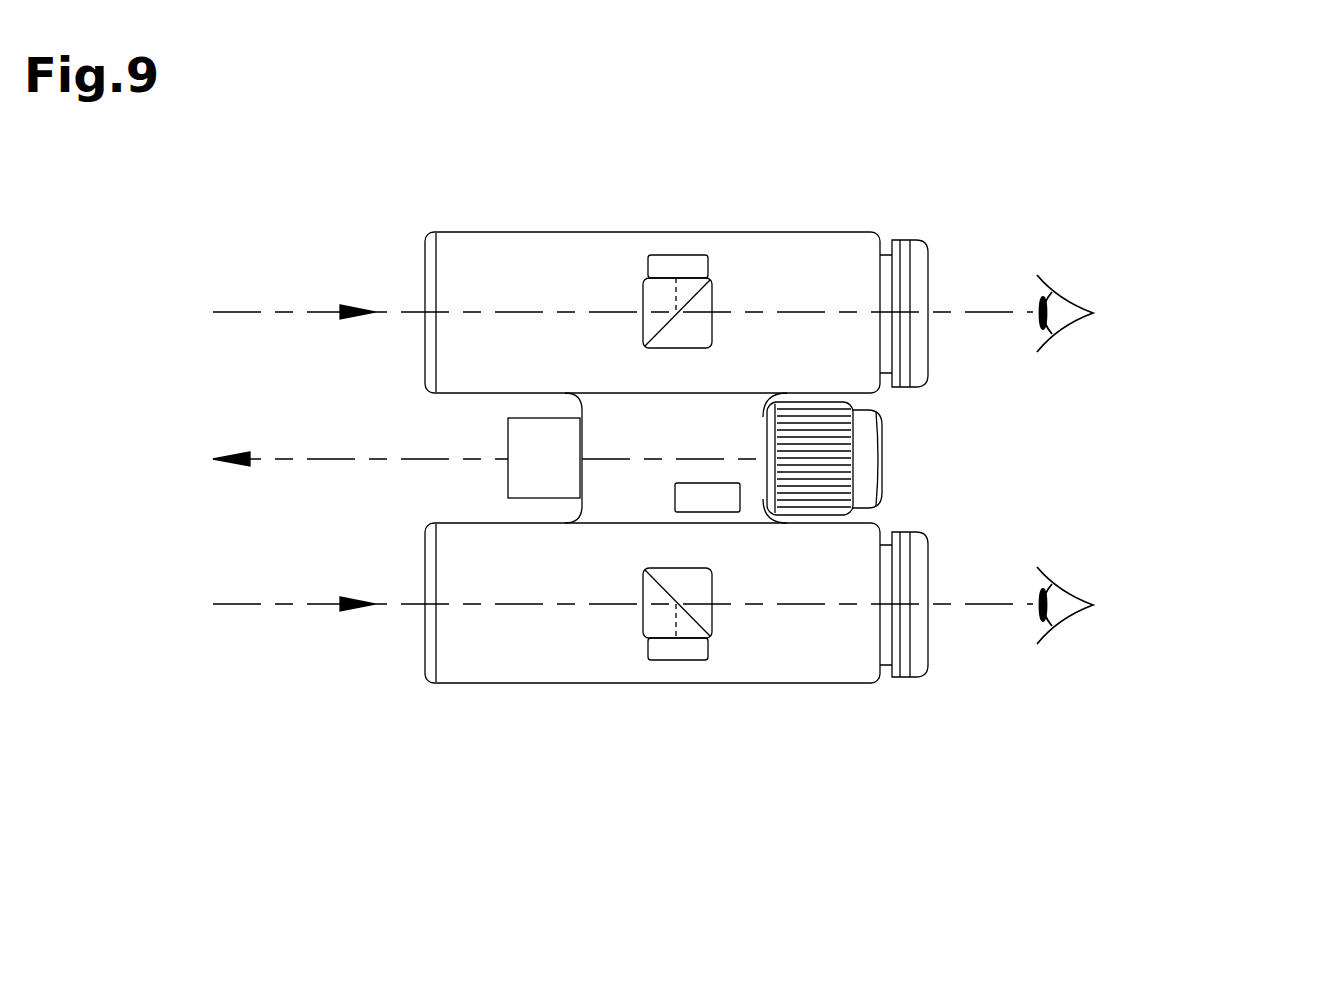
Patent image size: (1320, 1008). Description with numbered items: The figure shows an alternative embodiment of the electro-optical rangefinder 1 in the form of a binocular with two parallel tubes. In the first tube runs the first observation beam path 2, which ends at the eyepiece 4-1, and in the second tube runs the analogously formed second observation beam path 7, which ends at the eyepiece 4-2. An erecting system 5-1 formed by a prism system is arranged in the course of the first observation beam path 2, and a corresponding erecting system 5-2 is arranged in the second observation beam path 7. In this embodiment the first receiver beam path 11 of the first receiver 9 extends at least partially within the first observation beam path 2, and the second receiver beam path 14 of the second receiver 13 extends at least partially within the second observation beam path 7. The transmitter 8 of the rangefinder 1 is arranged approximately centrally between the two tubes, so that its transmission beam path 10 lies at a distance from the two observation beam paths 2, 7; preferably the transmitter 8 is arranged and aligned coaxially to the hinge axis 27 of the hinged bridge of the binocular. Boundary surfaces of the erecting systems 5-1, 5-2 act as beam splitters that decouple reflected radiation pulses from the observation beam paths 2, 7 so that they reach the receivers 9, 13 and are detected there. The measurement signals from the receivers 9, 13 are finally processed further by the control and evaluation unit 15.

The electro-optical rangefinder 1 is at (1219, 130).
The first observation beam path 2 is at (772, 607).
The eyepiece 4-1 is at (965, 678).
The eyepiece 4-2 is at (968, 251).
The erecting system 5-1 is at (632, 628).
The erecting system 5-2 is at (632, 279).
The second observation beam path 7 is at (790, 311).
The transmitter 8 is at (485, 480).
The first receiver 9 is at (662, 684).
The transmission beam path 10 is at (348, 457).
The first receiver beam path 11 is at (665, 607).
The second receiver 13 is at (716, 233).
The second receiver beam path 14 is at (668, 299).
The control and evaluation unit 15 is at (723, 519).
The hinge axis 27 is at (688, 458).